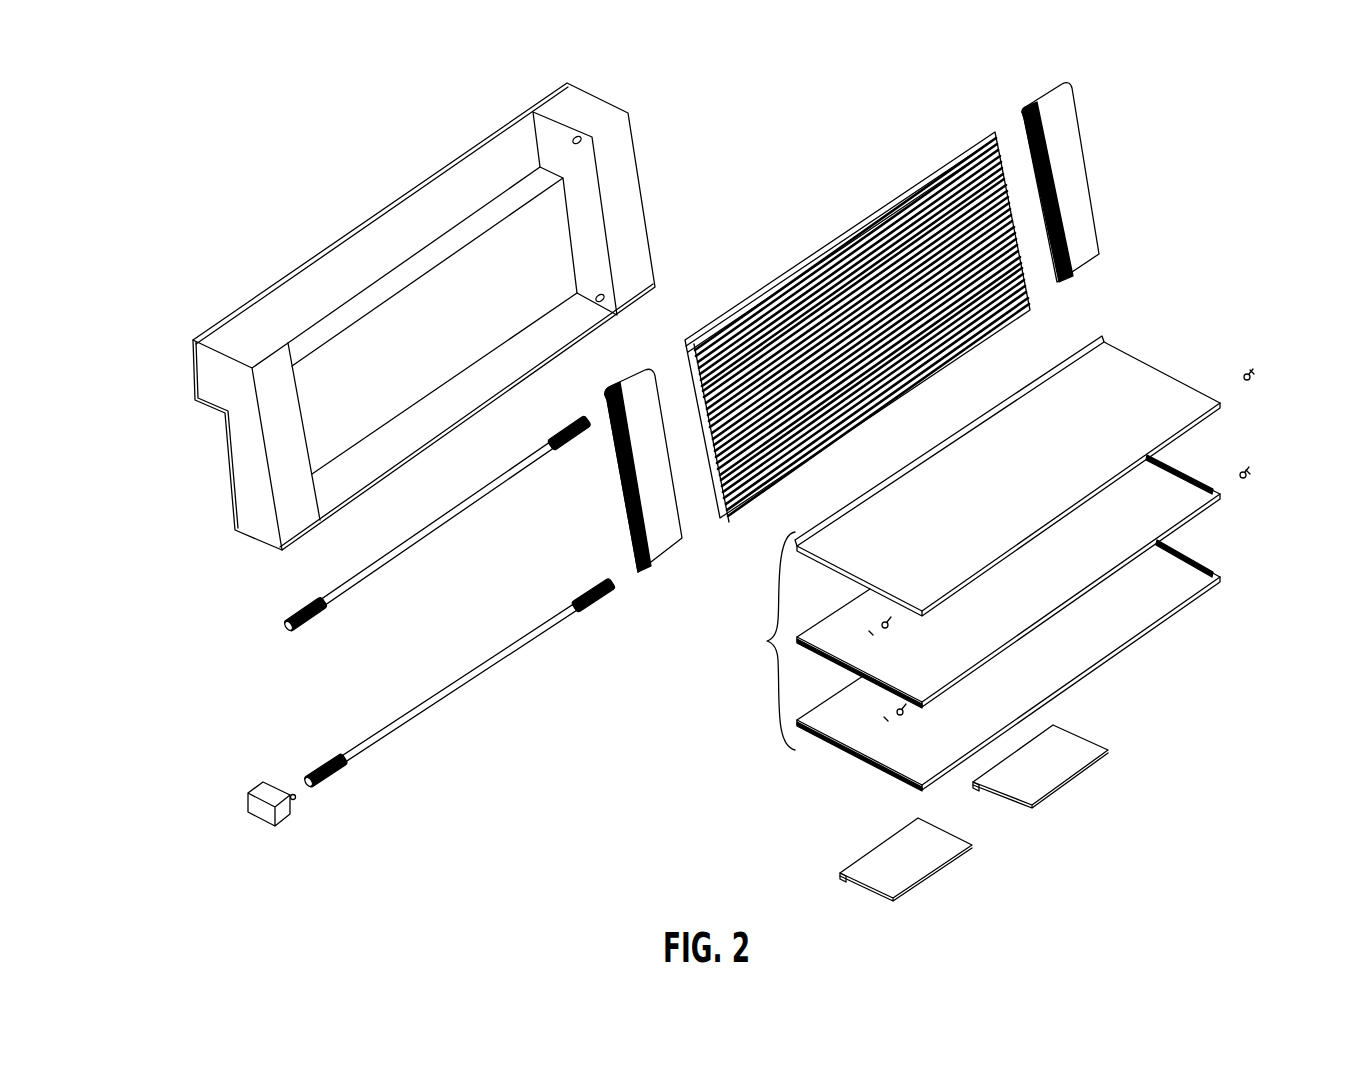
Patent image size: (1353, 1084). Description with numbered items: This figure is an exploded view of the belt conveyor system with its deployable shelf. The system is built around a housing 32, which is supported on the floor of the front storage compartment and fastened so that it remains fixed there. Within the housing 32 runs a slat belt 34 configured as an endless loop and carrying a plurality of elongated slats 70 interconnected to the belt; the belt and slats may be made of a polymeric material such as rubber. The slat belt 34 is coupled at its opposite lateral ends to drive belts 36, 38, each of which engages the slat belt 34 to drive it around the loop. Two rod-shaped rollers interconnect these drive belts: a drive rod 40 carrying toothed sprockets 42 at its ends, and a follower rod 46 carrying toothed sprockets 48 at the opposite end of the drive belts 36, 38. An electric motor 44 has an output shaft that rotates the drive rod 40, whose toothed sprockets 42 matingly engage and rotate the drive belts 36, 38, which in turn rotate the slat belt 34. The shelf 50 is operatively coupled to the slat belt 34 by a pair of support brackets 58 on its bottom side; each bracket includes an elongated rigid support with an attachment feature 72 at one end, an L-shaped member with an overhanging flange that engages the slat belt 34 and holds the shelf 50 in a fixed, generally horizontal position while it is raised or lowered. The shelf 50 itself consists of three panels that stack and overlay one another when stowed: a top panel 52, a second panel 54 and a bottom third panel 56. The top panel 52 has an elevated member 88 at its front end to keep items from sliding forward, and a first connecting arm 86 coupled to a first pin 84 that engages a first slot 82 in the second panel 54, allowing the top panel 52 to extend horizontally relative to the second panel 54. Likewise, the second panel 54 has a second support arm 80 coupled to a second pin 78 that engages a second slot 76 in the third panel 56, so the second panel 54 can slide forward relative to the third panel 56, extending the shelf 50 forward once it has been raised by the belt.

The housing 32 is at (625, 170).
The slat belt 34 is at (918, 167).
The elongated slats 70 is at (967, 146).
The drive belt 38 is at (1065, 112).
The drive belt 36 is at (665, 548).
The drive rod 40 is at (455, 688).
The toothed sprockets 42 is at (335, 778).
The electric motor 44 is at (262, 787).
The follower rod 46 is at (432, 530).
The toothed sprockets 48 is at (308, 620).
The shelf 50 is at (769, 641).
The top panel 52 is at (1158, 380).
The second panel 54 is at (1163, 483).
The third panel 56 is at (1177, 567).
The support brackets 58 is at (1052, 773).
The attachment feature 72 is at (975, 783).
The second slot 76 is at (850, 752).
The second pin 78 is at (887, 720).
The second support arm 80 is at (895, 717).
The first slot 82 is at (879, 679).
The first pin 84 is at (871, 633).
The first connecting arm 86 is at (879, 618).
The elevated member 88 is at (1102, 338).